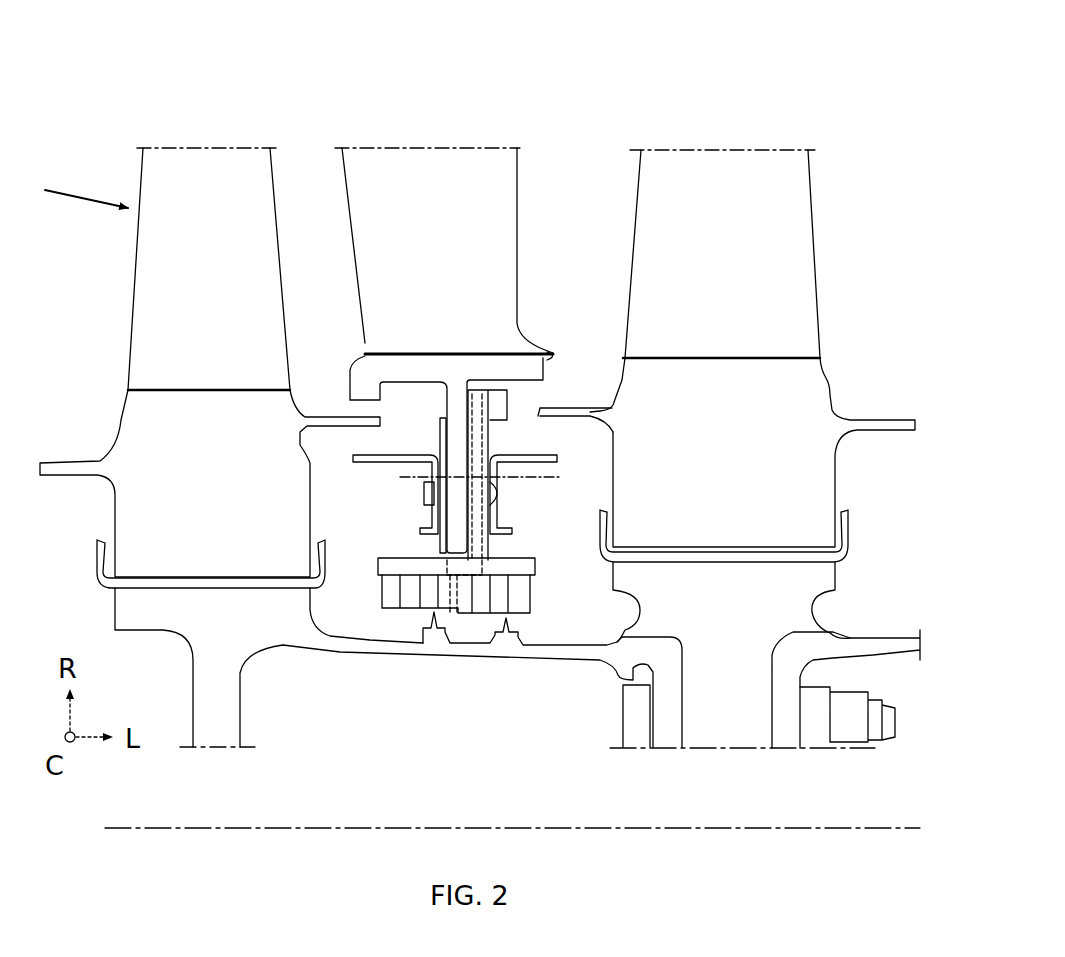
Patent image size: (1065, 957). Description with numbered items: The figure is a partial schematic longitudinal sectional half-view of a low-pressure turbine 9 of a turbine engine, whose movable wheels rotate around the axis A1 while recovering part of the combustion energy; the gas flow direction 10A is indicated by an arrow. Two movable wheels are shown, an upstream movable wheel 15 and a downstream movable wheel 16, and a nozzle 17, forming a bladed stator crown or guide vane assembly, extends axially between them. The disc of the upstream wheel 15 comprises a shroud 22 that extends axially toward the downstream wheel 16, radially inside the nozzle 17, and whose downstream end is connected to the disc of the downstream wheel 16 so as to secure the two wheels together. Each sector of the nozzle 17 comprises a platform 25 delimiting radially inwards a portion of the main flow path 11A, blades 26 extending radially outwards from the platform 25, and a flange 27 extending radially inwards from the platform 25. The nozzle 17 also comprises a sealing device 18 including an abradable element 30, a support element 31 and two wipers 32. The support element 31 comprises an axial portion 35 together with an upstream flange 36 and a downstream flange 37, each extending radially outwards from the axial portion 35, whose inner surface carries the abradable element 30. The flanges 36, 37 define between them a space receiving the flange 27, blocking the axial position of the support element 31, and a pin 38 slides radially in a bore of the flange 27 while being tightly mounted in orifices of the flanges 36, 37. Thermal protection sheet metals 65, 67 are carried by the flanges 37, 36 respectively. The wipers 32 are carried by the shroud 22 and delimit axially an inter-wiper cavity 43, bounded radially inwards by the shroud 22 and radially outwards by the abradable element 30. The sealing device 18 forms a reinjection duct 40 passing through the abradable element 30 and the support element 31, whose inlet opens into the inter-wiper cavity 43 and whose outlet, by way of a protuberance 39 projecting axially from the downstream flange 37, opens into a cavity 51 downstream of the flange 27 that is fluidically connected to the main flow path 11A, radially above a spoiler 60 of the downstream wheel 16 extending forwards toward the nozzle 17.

The low-pressure turbine 9 is at (135, 95).
The gas flow direction 10A is at (80, 197).
The main flow path 11A is at (340, 223).
The upstream movable wheel 15 is at (210, 330).
The downstream movable wheel 16 is at (752, 357).
The nozzle 17 is at (438, 359).
The sealing device 18 is at (516, 695).
The shroud 22 is at (357, 647).
The platform 25 is at (495, 360).
The blades 26 is at (500, 180).
The flange 27 is at (457, 418).
The abradable element 30 is at (522, 598).
The support element 31 is at (359, 496).
The wipers 32 is at (434, 628).
The axial portion 35 is at (380, 559).
The upstream flange 36 is at (442, 532).
The downstream flange 37 is at (424, 492).
The pin 38 is at (500, 492).
The protuberance 39 is at (503, 390).
The reinjection duct 40 is at (560, 477).
The inter-wiper cavity 43 is at (487, 645).
The cavity 51 is at (552, 412).
The spoiler 60 is at (540, 410).
The thermal protection sheet metal 65 is at (558, 458).
The thermal protection sheet metal 67 is at (350, 458).
The axis A1 is at (182, 828).